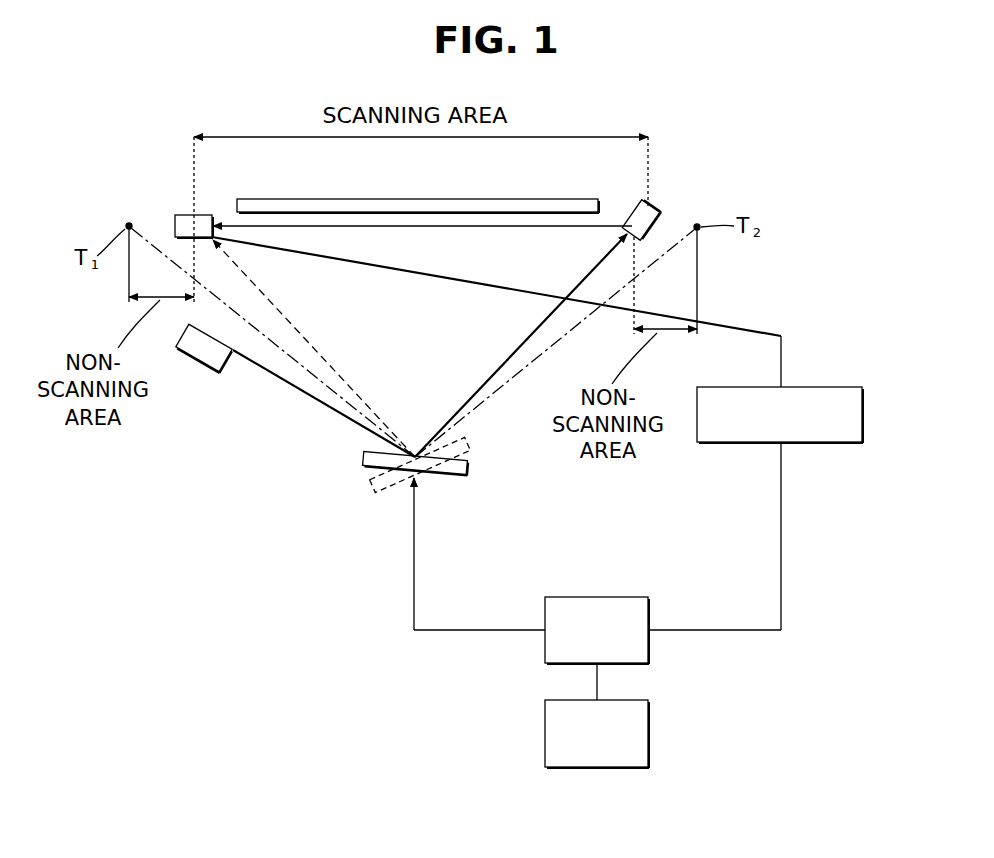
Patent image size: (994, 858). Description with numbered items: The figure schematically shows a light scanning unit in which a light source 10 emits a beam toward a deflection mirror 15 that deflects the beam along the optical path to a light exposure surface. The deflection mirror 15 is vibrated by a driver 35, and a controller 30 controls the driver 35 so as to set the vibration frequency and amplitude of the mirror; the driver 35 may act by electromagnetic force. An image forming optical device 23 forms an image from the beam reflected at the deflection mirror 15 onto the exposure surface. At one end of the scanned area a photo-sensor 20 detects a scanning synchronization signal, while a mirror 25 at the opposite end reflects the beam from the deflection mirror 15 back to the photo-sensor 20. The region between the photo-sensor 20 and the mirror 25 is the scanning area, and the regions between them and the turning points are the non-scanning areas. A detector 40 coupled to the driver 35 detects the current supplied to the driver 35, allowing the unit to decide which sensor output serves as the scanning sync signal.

The light source 10 is at (197, 365).
The deflection mirror 15 is at (363, 455).
The photo-sensor 20 is at (181, 215).
The image forming optical device 23 is at (455, 198).
The mirror 25 is at (655, 210).
The controller 30 is at (827, 387).
The driver 35 is at (649, 650).
The detector 40 is at (649, 736).